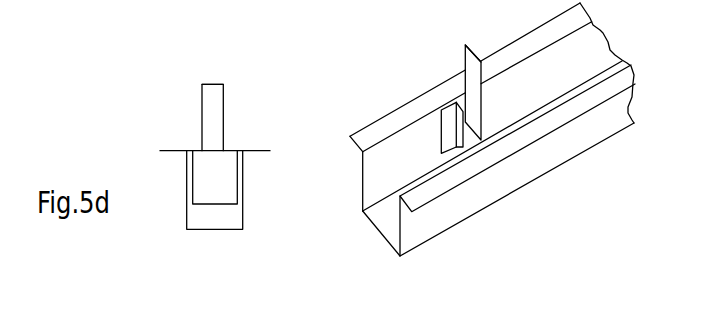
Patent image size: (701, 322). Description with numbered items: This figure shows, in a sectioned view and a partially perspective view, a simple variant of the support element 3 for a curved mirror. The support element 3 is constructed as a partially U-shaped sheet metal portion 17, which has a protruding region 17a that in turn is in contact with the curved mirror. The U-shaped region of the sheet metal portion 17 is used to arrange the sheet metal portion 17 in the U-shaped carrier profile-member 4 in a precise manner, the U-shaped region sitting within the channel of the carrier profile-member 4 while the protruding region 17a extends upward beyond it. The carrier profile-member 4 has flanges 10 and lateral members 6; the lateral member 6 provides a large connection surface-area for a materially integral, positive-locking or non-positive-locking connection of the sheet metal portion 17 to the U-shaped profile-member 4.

The support element 3 is at (186, 109).
The U-shaped carrier profile-member 4 is at (243, 202).
The lateral member 6 is at (362, 190).
The flange 10 is at (368, 135).
The partially U-shaped sheet metal portion 17 is at (217, 127).
The protruding region 17a is at (212, 90).